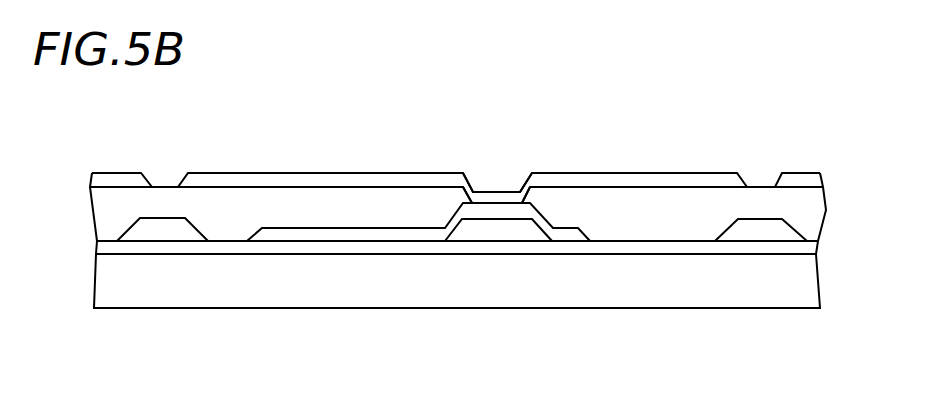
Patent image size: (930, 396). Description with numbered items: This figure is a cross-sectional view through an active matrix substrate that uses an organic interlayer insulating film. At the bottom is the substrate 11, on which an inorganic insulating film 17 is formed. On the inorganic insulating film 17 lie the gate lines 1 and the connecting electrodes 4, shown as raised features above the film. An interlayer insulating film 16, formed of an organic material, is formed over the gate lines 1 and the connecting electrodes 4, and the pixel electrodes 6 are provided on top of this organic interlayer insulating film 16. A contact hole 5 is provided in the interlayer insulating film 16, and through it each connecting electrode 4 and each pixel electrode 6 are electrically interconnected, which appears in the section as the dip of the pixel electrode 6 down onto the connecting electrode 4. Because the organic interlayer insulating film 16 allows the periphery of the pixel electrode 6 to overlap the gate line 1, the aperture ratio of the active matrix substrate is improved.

The gate line 1 is at (140, 222).
The connecting electrode 4 is at (333, 235).
The contact hole 5 is at (498, 180).
The pixel electrode 6 is at (223, 170).
The substrate 11 is at (685, 288).
The interlayer insulating film 16 is at (663, 218).
The inorganic insulating film 17 is at (765, 250).